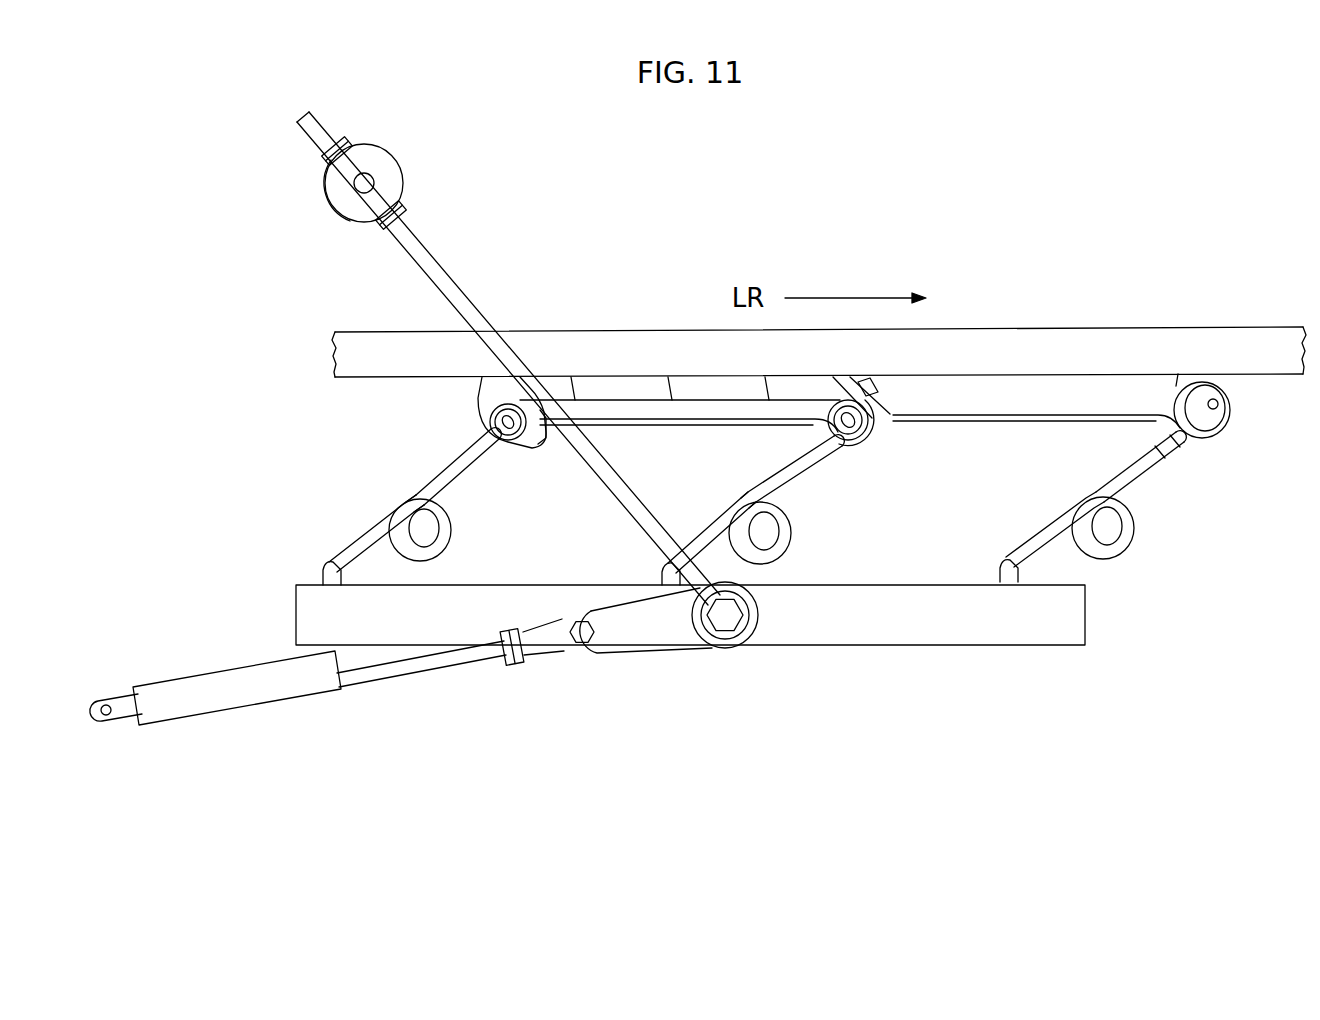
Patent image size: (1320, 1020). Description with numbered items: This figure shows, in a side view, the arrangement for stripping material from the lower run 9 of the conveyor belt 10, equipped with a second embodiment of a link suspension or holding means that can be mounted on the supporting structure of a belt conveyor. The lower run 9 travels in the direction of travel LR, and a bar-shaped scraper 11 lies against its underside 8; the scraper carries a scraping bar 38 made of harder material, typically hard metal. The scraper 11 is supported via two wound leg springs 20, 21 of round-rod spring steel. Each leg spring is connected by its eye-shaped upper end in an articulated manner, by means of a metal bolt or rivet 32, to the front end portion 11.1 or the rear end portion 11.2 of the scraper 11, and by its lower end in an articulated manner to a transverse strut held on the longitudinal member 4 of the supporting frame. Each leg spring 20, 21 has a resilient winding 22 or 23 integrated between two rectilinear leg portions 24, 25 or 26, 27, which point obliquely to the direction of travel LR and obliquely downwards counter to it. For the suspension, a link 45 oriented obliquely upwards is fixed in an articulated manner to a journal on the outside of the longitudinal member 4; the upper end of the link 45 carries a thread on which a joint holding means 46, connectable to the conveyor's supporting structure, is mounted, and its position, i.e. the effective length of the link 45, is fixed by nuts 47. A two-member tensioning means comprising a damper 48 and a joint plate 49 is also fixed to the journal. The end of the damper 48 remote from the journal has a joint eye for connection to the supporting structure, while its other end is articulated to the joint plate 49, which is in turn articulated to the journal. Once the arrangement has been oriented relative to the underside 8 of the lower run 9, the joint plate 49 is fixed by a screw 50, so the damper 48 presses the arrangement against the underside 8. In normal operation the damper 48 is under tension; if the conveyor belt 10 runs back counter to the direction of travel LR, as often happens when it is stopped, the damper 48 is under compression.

The longitudinal member 4 is at (948, 626).
The underside 8 is at (353, 384).
The lower run 9 is at (1115, 342).
The conveyor belt 10 is at (1220, 326).
The scraper 11 is at (735, 412).
The front end portion 11.1 is at (526, 445).
The rear end portion 11.2 is at (866, 440).
The leg spring 20 is at (396, 502).
The leg spring 21 is at (1160, 460).
The resilient winding 22 is at (450, 545).
The resilient winding 23 is at (1120, 546).
The leg portion 24 is at (356, 537).
The leg portion 25 is at (462, 468).
The leg portion 26 is at (1038, 532).
The leg portion 27 is at (1130, 470).
The metal bolt or rivet 32 is at (862, 425).
The scraping bar 38 is at (638, 387).
The link 45 is at (470, 292).
The joint holding means 46 is at (390, 168).
The nuts 47 is at (328, 160).
The damper 48 is at (232, 676).
The joint plate 49 is at (642, 628).
The screw 50 is at (722, 622).